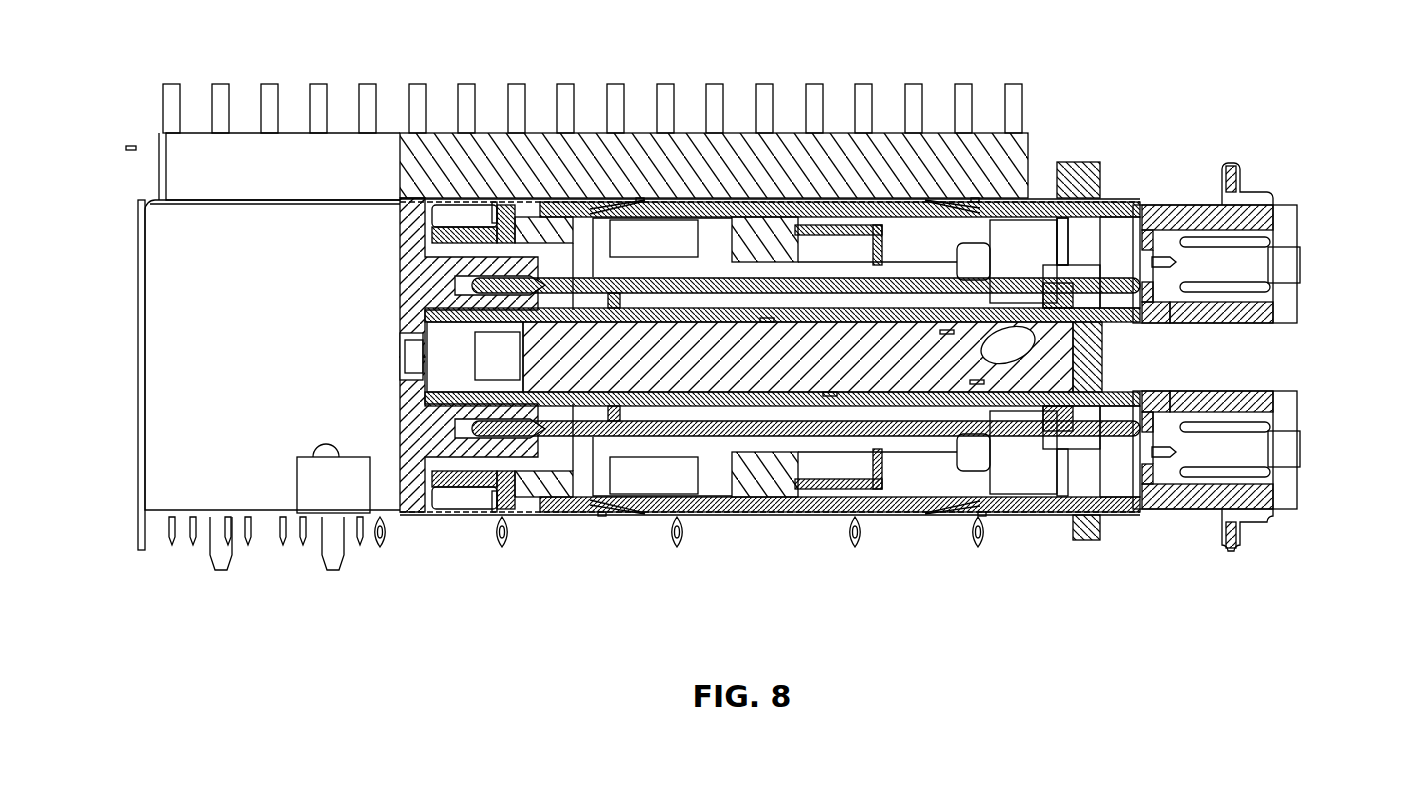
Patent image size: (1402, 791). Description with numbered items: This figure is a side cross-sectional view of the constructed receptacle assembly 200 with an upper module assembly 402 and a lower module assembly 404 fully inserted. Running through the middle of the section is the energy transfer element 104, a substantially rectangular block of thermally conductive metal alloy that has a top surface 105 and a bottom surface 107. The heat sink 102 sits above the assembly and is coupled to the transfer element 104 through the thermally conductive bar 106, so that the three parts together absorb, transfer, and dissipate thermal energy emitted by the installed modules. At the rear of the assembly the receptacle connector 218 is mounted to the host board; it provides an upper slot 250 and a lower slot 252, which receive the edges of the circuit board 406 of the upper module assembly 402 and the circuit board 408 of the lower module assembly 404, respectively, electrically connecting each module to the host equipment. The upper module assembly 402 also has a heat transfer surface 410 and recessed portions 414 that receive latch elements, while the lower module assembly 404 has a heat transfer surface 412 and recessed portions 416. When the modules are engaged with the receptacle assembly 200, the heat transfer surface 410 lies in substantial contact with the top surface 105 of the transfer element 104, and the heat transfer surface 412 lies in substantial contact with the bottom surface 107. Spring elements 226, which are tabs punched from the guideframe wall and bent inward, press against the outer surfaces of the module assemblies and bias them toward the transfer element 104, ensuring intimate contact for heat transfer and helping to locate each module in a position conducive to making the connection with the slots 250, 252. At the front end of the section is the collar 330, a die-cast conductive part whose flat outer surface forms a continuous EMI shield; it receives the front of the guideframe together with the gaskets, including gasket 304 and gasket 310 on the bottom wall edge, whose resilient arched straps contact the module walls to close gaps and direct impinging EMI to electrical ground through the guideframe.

The receptacle assembly 200 is at (130, 147).
The heat sink 102 is at (630, 174).
The energy transfer element 104 is at (754, 369).
The top surface 105 is at (947, 333).
The thermally conductive bar 106 is at (1037, 348).
The bottom surface 107 is at (977, 381).
The receptacle connector 218 is at (225, 337).
The spring elements 226 is at (642, 196).
The upper slot 250 is at (420, 305).
The lower slot 252 is at (420, 447).
The gasket 304 is at (1063, 162).
The gasket 310 is at (1052, 517).
The collar 330 is at (1088, 162).
The upper module assembly 402 is at (1296, 192).
The lower module assembly 404 is at (1308, 462).
The circuit board 406 is at (470, 290).
The circuit board 408 is at (470, 430).
The heat transfer surface 410 is at (767, 319).
The heat transfer surface 412 is at (830, 396).
The recessed portions 414 is at (590, 197).
The recessed portions 416 is at (586, 518).